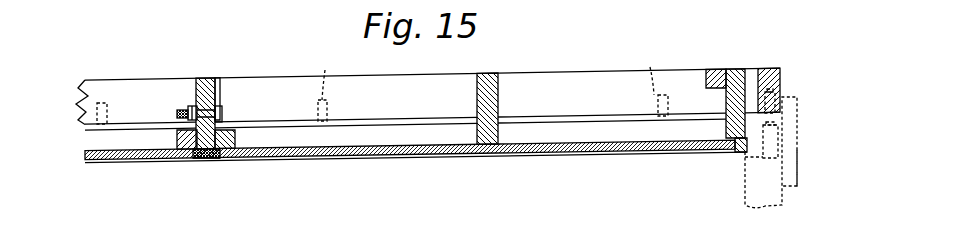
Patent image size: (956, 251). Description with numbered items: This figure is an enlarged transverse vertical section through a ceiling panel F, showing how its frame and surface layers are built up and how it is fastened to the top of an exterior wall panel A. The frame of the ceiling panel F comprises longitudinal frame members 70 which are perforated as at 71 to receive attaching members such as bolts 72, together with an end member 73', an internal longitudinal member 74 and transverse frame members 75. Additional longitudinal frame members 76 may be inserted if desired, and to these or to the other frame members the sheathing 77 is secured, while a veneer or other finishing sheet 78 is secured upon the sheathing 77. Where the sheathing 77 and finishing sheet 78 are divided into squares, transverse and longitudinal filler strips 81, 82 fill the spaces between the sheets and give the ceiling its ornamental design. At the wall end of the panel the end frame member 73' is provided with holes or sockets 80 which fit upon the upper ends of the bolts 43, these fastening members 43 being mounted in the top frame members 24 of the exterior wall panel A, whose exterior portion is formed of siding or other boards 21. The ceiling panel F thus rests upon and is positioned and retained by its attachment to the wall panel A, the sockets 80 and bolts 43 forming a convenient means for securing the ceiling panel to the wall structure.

The end member 73' is at (448, 87).
The transverse frame members 75 is at (118, 142).
The sheathing 77 is at (345, 150).
The finishing sheet 78 is at (324, 158).
The longitudinal frame members 70 is at (200, 82).
The perforations 71 is at (195, 98).
The bolts 72 is at (228, 97).
The additional longitudinal frame members 76 is at (185, 132).
The longitudinal filler strips 82 is at (203, 162).
The transverse filler strips 81 is at (195, 154).
The internal longitudinal member 74 is at (487, 75).
The holes or sockets 80 is at (74, 107).
The fastening members 43 is at (768, 118).
The top frame members 24 is at (778, 130).
The siding or other boards 21 is at (797, 168).
The ceiling panels F is at (140, 166).
The exterior wall panels A is at (747, 200).